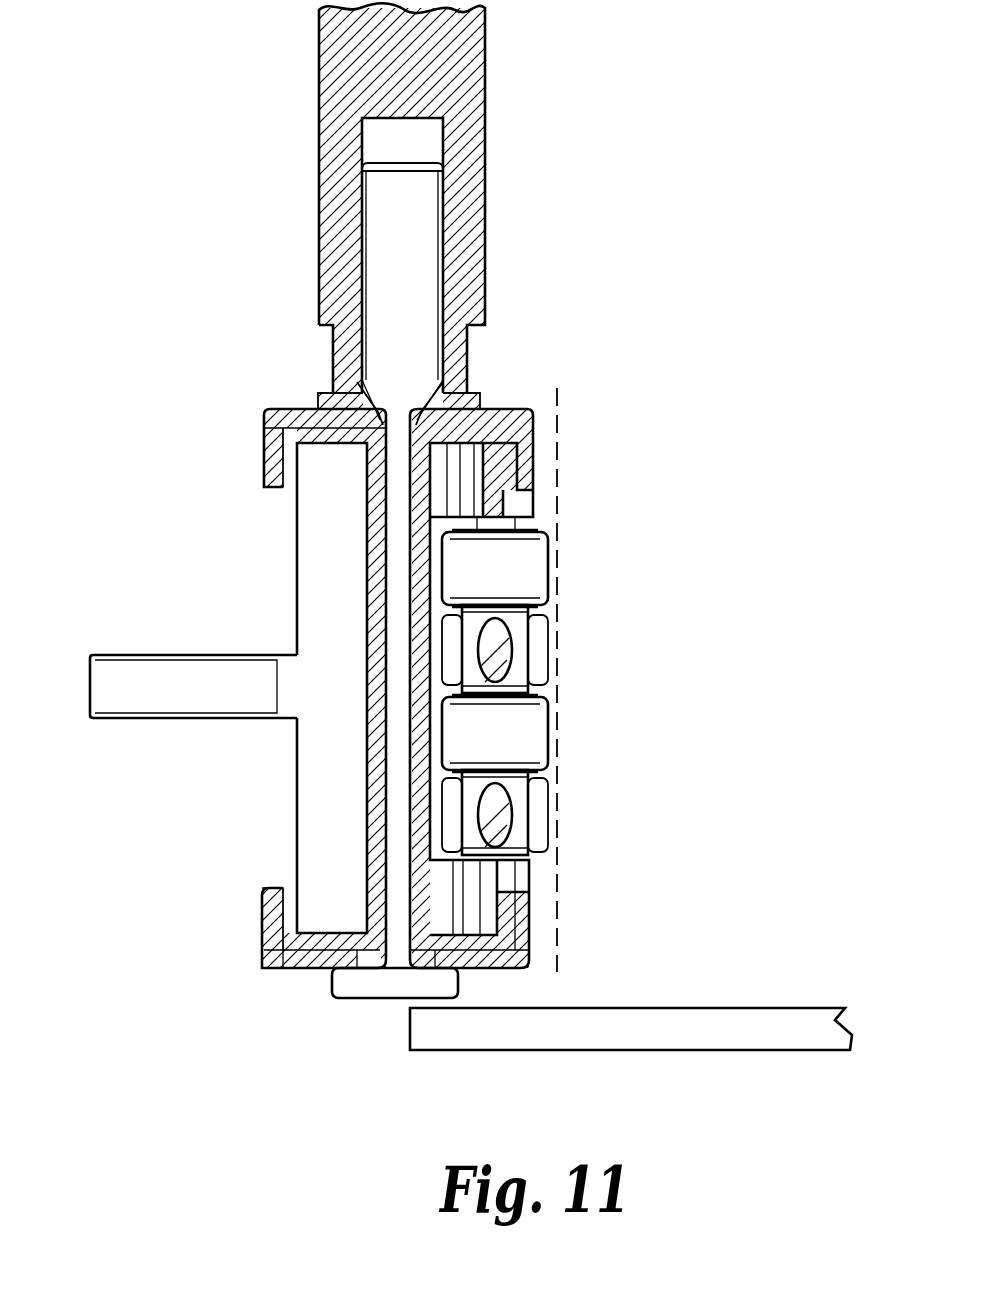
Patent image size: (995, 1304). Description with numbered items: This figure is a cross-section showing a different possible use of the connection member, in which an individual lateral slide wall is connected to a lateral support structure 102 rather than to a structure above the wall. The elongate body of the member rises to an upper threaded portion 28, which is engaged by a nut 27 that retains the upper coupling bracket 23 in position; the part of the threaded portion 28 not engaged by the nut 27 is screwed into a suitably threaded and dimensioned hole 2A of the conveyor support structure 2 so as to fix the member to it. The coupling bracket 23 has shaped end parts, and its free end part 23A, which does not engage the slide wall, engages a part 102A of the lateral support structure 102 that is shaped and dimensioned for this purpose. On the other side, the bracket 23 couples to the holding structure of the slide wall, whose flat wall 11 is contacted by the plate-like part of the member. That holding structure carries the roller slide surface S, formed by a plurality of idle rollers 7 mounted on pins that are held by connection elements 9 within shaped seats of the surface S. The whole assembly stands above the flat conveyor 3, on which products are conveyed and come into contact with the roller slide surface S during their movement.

The conveyor support structure 2 is at (465, 48).
The threaded hole 2A is at (368, 249).
The upper threaded portion 28 is at (415, 212).
The nut 27 is at (322, 397).
The coupling bracket 23 is at (512, 424).
The end part of bracket 23A is at (264, 458).
The connection elements 9 is at (460, 503).
The idle rollers 7 is at (522, 563).
The flat wall 11 is at (412, 725).
The lateral support structure 102 is at (149, 683).
The shaped part of lateral support structure 102A is at (324, 831).
The flat conveyor 3 is at (727, 1018).
The roller slide surface S is at (560, 398).